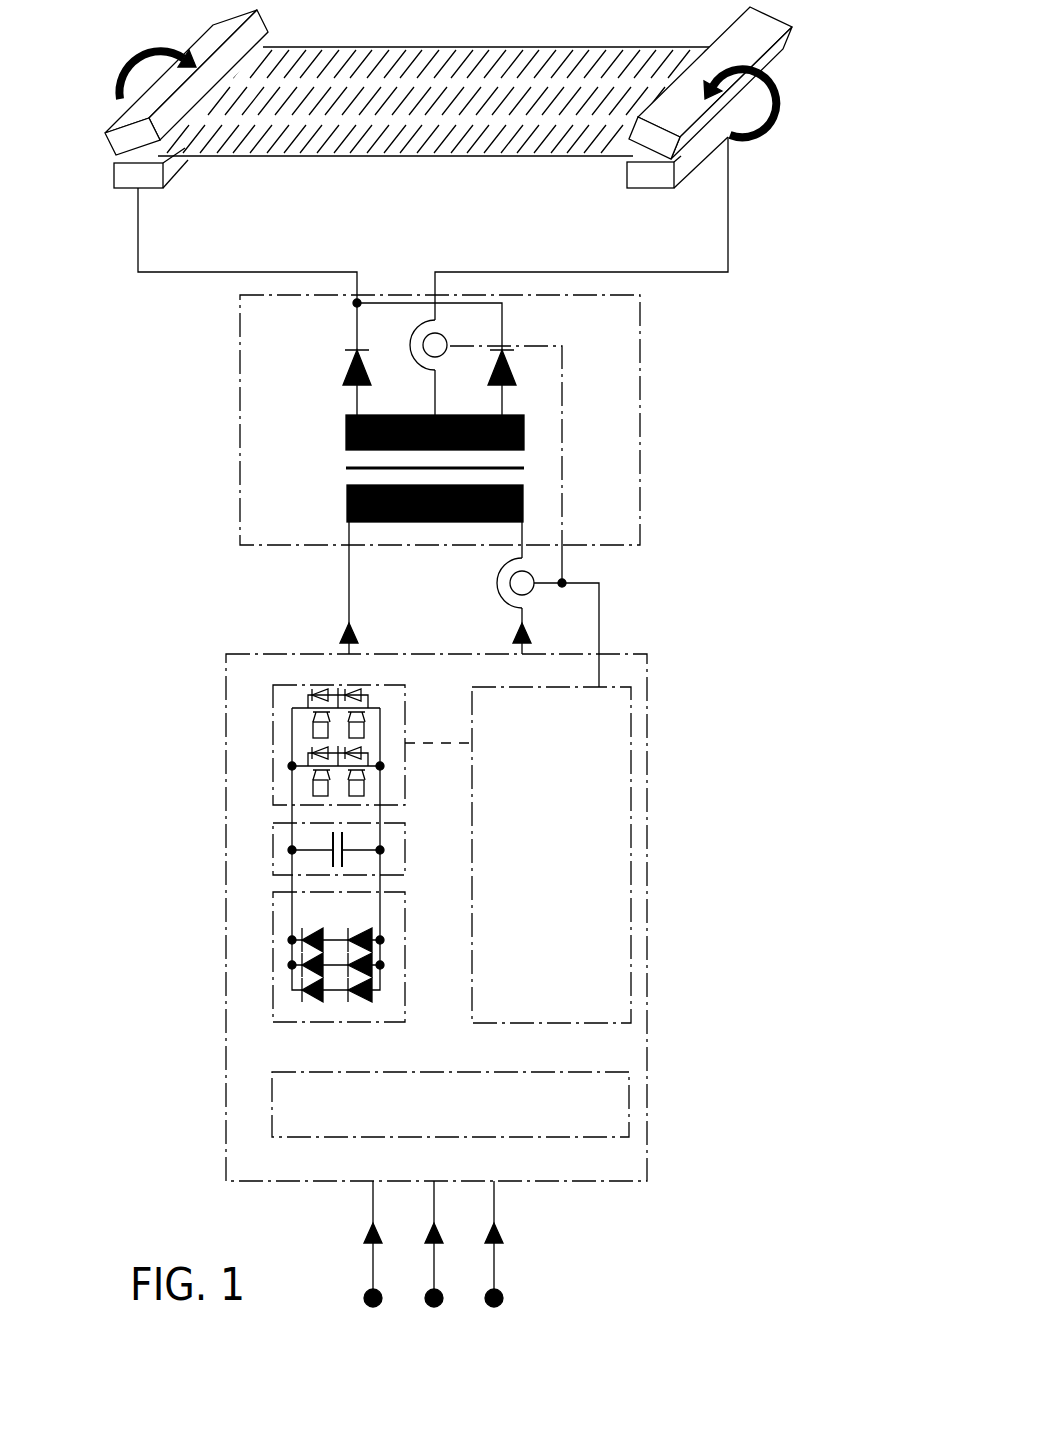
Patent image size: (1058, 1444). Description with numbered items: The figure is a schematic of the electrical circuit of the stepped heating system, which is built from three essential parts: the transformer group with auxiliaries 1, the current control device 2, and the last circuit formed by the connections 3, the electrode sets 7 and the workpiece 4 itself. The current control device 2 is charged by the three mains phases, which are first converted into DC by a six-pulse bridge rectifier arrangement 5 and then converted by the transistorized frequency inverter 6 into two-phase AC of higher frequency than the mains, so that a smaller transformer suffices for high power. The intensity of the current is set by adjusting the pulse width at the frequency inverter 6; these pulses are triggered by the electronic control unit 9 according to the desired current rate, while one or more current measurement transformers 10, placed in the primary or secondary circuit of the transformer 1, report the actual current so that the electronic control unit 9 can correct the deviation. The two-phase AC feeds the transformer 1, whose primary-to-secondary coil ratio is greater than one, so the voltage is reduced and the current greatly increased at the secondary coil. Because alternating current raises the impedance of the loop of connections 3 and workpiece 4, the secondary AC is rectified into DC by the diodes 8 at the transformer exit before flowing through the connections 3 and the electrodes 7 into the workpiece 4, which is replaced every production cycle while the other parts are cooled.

The transformer group with auxiliaries 1 is at (260, 407).
The current control device 2 is at (225, 665).
The connections of the secondary circuit 3 is at (202, 268).
The workpiece 4 is at (417, 145).
The 6-pulse bridge rectifier arrangement 5 is at (278, 975).
The transistorized frequency inverter 6 is at (280, 790).
The electrodes 7 is at (655, 198).
The diodes 8 is at (338, 368).
The electronic control unit 9 is at (482, 1012).
The current measurement transformer 10 is at (440, 341).